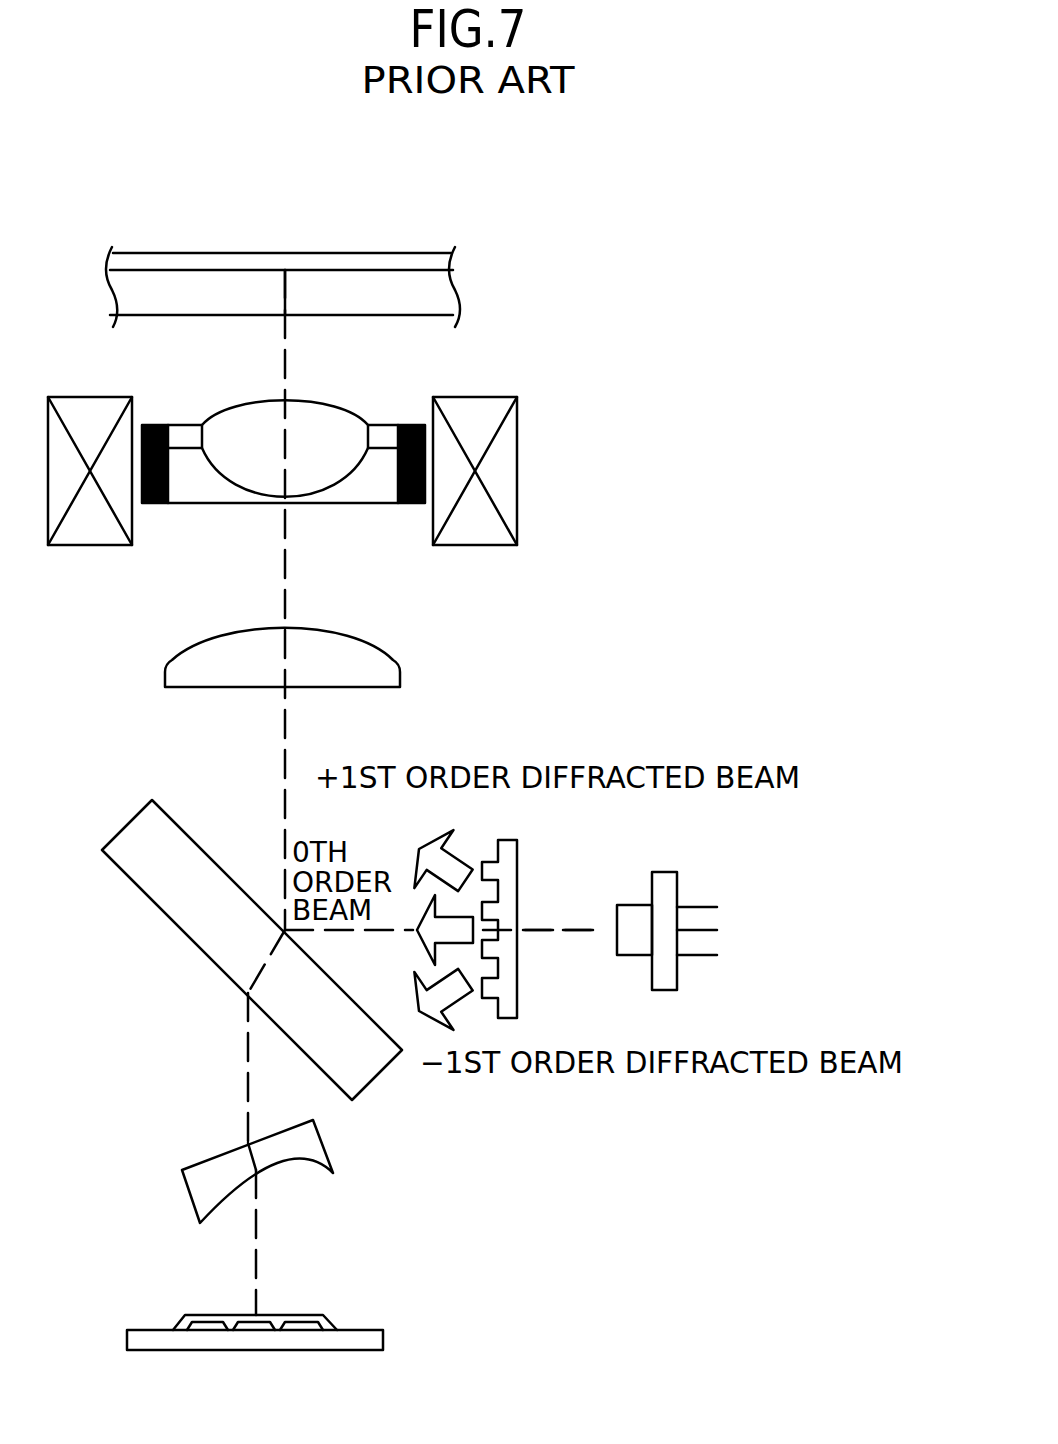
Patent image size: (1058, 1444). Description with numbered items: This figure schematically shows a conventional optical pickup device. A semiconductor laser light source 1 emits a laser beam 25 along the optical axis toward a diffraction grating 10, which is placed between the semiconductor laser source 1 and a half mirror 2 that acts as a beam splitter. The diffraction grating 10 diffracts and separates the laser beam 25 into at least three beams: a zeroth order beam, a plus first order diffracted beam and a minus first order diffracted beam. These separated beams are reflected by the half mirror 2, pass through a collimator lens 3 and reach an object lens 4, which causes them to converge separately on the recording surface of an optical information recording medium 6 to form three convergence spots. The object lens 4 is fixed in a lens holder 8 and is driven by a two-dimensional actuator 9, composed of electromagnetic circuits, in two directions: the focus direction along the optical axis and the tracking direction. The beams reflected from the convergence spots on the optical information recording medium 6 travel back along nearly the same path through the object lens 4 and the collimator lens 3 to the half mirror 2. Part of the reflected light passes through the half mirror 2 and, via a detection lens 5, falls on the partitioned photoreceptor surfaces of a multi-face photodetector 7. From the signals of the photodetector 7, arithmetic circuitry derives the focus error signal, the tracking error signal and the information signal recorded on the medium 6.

The semiconductor laser light source 1 is at (668, 992).
The half mirror 2 is at (373, 1080).
The collimator lens 3 is at (218, 687).
The object lens 4 is at (240, 400).
The detection lens 5 is at (187, 1195).
The optical information recording medium 6 is at (420, 317).
The photodetector 7 is at (383, 1340).
The lens holder 8 is at (192, 503).
The two-dimensional actuator 9 is at (517, 485).
The diffraction grating 10 is at (515, 880).
The laser beam 25 is at (560, 932).